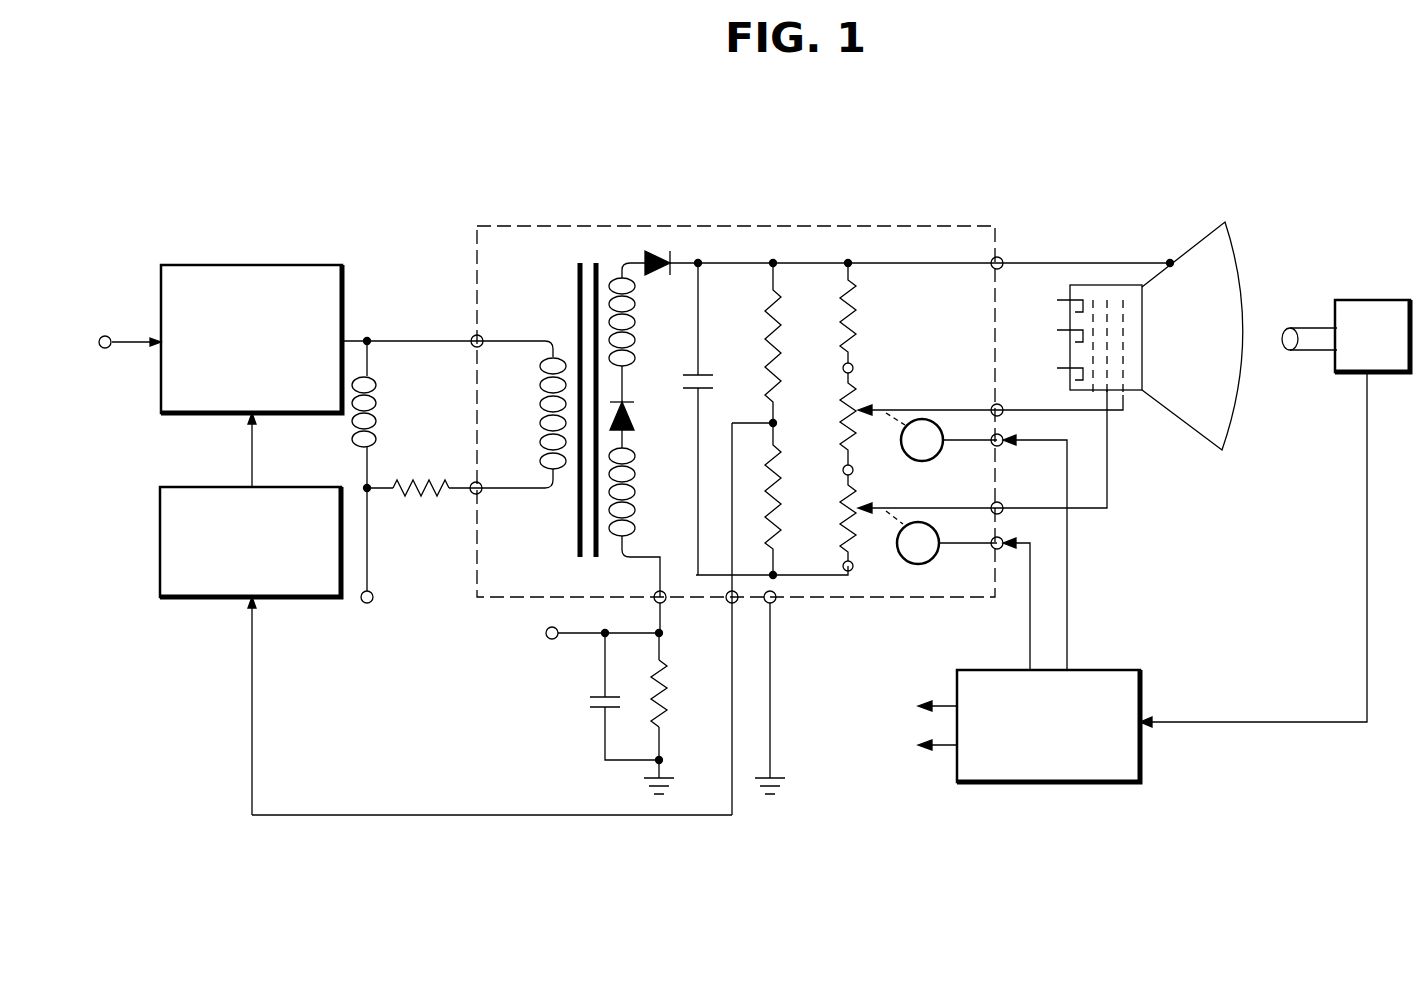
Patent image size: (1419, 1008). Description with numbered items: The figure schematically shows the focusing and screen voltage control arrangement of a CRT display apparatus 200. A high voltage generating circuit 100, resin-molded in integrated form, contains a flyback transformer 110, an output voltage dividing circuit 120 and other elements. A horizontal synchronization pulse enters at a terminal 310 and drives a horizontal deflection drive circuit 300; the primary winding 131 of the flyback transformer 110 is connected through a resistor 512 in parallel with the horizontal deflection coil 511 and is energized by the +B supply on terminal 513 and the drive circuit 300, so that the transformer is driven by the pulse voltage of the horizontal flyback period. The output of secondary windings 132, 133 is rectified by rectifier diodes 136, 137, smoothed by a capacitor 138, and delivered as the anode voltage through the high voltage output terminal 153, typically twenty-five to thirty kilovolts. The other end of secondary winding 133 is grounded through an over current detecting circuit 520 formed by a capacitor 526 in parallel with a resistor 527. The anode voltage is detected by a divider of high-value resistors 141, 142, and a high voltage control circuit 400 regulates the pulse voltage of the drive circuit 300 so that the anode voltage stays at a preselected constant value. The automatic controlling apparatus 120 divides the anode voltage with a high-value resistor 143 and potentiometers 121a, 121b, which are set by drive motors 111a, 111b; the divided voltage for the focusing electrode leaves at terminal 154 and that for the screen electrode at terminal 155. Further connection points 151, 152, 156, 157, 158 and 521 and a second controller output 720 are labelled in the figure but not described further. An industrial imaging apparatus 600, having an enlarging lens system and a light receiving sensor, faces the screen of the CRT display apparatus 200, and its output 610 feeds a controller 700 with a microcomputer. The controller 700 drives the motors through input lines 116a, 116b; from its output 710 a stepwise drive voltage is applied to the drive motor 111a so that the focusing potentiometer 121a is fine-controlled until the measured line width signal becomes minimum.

The high voltage generating circuit 100 is at (546, 220).
The flyback transformer 110 is at (566, 258).
The output voltage dividing circuit 120 is at (960, 342).
The primary winding 131 is at (540, 428).
The secondary winding 132 is at (636, 336).
The secondary winding 133 is at (632, 506).
The rectifier diode 136 is at (634, 412).
The rectifier diode 137 is at (692, 252).
The capacitor 138 is at (700, 372).
The resistor having high resistance value 141 is at (784, 366).
The resistor having high resistance value 142 is at (778, 496).
The resistor having high resistance value 143 is at (862, 322).
The focusing potentiometer 121a is at (856, 392).
The potentiometer 121b is at (850, 497).
The drive motor 111a is at (943, 418).
The drive motor 111b is at (940, 486).
The input line 116a is at (942, 441).
The input line 116b is at (939, 556).
The terminal 151 is at (481, 335).
The terminal 152 is at (479, 493).
The high voltage output terminal 153 is at (1004, 261).
The terminal 154 is at (1000, 405).
The terminal 155 is at (1002, 504).
The terminal 156 is at (776, 601).
The terminal 157 is at (728, 600).
The terminal 158 is at (654, 600).
The CRT display apparatus 200 is at (1160, 363).
The horizontal deflection drive circuit 300 is at (244, 265).
The terminal 310 is at (106, 336).
The high voltage control circuit 400 is at (296, 487).
The horizontal deflection coil 511 is at (377, 411).
The resistor 512 is at (424, 480).
The terminal 513 is at (372, 592).
The over current detecting circuit 520 is at (585, 747).
The terminal 521 is at (544, 634).
The capacitor 526 is at (598, 694).
The resistor 527 is at (672, 700).
The industrial imaging apparatus (ITV) 600 is at (1366, 300).
The output 610 is at (1362, 634).
The controller 700 is at (1109, 670).
The output 710 is at (1068, 556).
The control line 720 is at (1032, 608).